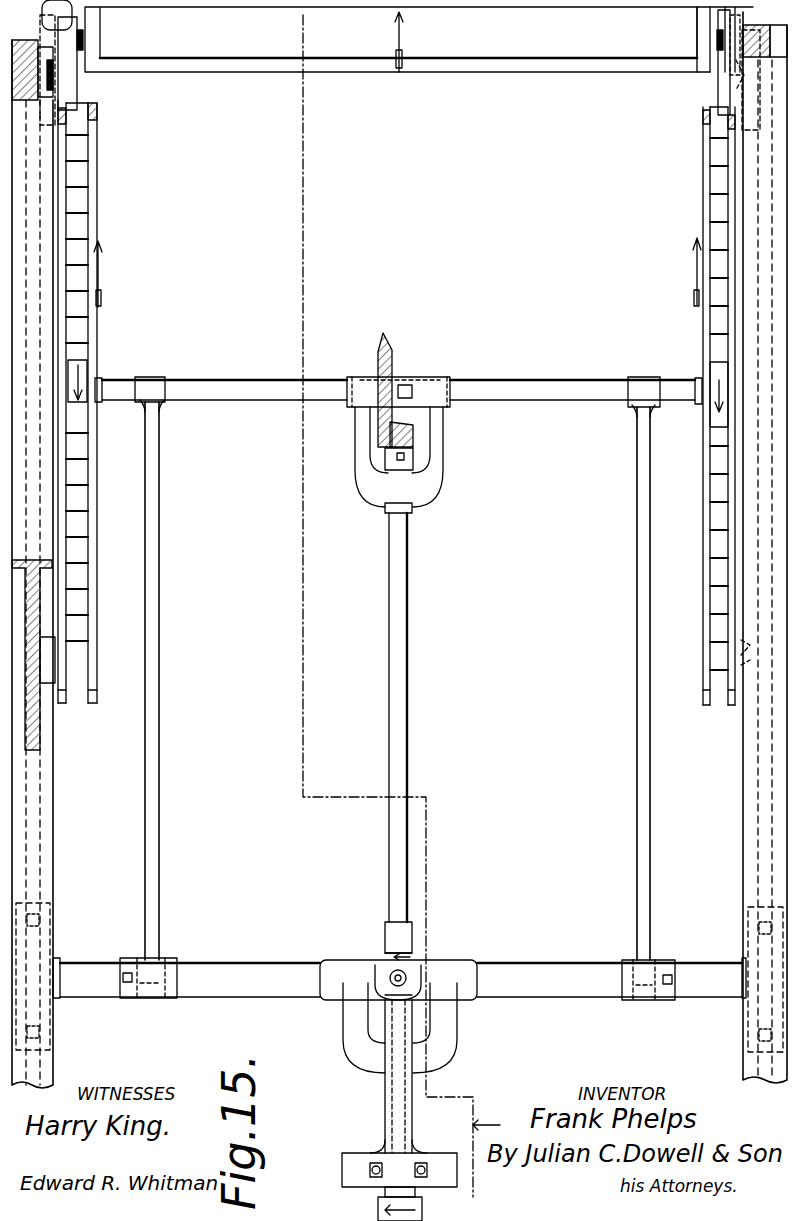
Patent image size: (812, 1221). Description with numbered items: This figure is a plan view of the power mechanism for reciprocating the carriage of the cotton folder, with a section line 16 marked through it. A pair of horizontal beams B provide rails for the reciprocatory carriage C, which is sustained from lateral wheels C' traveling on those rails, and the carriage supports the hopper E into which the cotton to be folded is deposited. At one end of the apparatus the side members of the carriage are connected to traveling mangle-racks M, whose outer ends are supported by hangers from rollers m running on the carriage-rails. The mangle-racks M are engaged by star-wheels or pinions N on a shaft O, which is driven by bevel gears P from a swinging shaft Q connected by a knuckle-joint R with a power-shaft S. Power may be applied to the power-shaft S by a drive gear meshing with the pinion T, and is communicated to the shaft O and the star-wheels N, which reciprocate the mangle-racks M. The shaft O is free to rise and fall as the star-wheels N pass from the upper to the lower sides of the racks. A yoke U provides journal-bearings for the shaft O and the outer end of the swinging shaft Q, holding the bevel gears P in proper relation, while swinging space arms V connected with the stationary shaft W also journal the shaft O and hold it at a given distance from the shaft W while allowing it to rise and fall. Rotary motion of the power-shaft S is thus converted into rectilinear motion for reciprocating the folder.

The section line 16 is at (395, 615).
The hopper E is at (365, 64).
The reciprocatory carriage C is at (391, 57).
The lateral wheels C' is at (400, 88).
The mangle-racks M is at (80, 233).
The star-wheels N is at (75, 420).
The shaft O is at (258, 387).
The bevel gears P is at (382, 447).
The yoke U is at (433, 457).
The swinging shaft Q is at (398, 683).
The swinging space arms V is at (152, 668).
The rollers m is at (50, 670).
The horizontal beams B is at (36, 822).
The stationary shaft W is at (240, 975).
The knuckle-joint R is at (395, 975).
The power-shaft S is at (400, 1120).
The pinion T is at (382, 1212).